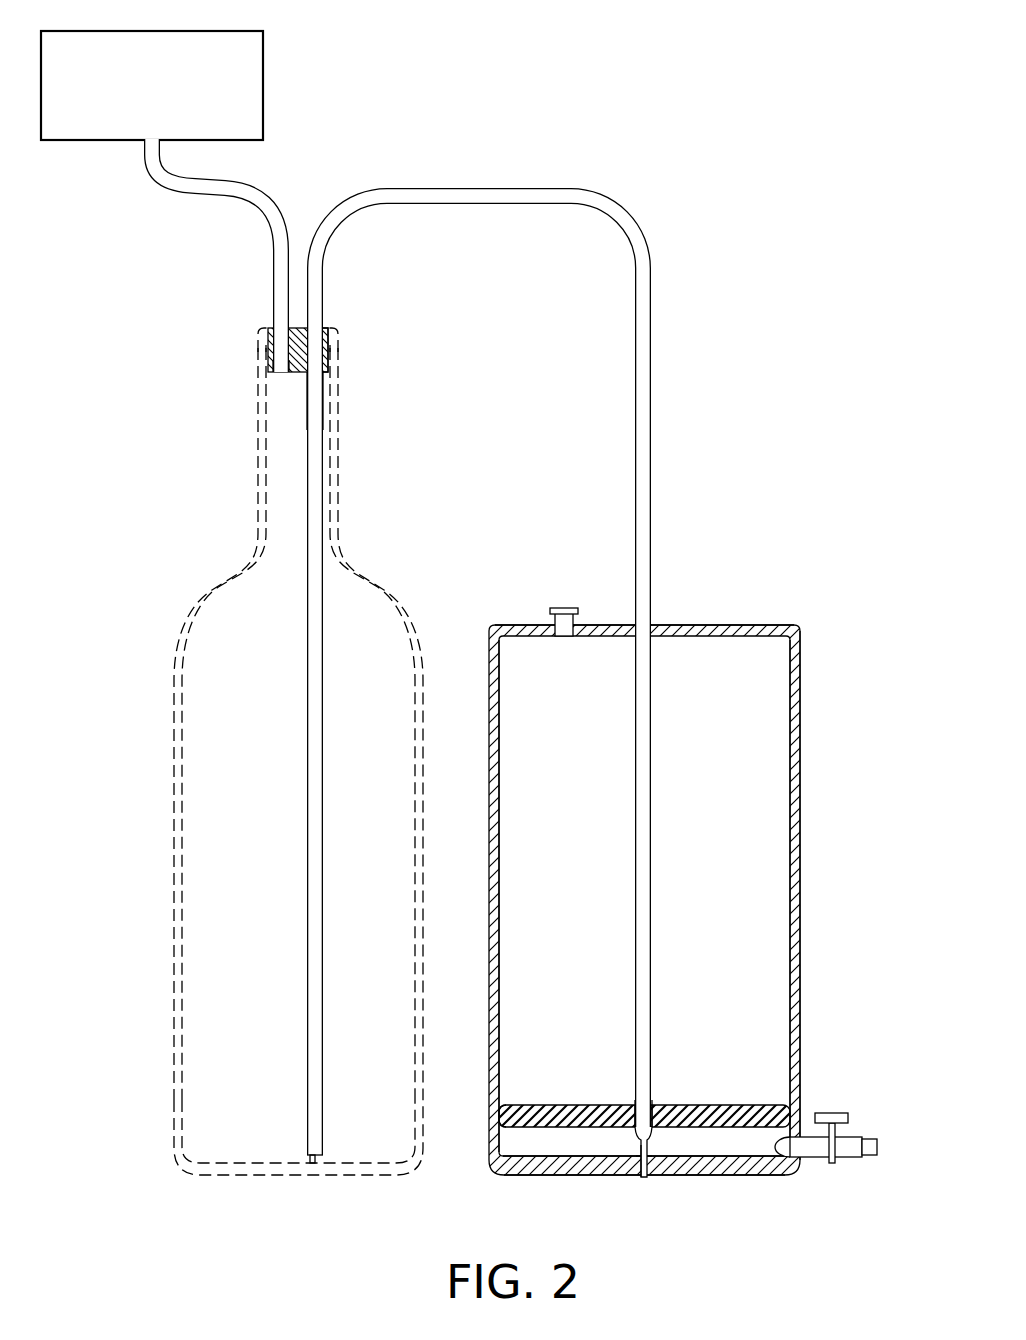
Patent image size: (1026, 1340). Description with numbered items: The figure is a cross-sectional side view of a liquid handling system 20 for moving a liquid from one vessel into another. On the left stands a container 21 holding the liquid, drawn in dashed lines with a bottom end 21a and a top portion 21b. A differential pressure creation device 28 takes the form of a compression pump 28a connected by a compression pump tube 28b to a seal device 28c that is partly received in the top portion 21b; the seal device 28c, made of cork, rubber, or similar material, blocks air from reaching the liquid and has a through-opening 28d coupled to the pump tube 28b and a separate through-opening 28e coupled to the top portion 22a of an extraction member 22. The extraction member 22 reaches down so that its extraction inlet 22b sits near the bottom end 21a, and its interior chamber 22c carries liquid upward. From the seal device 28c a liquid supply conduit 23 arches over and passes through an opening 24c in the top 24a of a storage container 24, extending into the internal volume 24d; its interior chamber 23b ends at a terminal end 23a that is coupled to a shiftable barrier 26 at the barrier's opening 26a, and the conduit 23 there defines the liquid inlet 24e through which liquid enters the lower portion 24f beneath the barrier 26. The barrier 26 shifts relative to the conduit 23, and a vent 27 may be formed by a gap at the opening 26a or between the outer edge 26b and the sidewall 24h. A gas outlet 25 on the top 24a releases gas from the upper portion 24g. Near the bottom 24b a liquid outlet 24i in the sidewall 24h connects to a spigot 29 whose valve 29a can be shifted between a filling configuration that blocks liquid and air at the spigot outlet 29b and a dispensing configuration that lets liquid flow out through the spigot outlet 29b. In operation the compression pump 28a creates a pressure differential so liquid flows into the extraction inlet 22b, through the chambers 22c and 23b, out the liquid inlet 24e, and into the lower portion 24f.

The liquid handling system 20 is at (758, 181).
The container 21 is at (172, 690).
The bottom end 21a is at (172, 1152).
The top portion 21b is at (340, 345).
The extraction member 22 is at (306, 910).
The top portion 22a is at (325, 393).
The extraction inlet 22b is at (313, 1166).
The interior chamber 22c is at (311, 1163).
The liquid supply conduit 23 is at (653, 347).
The terminal end 23a is at (649, 1180).
The interior chamber 23b is at (640, 1163).
The storage container 24 is at (800, 690).
The top 24a is at (738, 625).
The bottom 24b is at (727, 1172).
The opening 24c is at (653, 618).
The internal volume 24d is at (763, 780).
The liquid inlet 24e is at (648, 1165).
The lower portion 24f is at (519, 1143).
The upper portion 24g is at (505, 1071).
The sidewall 24h is at (785, 927).
The liquid outlet 24i is at (777, 1152).
The gas outlet 25 is at (562, 608).
The shiftable barrier 26 is at (580, 1117).
The opening 26a is at (641, 1133).
The outer edge 26b is at (495, 1120).
The vent 27 is at (653, 1105).
The differential pressure creation device 28 is at (302, 160).
The compression pump 28a is at (264, 40).
The compression pump tube 28b is at (207, 199).
The seal device 28c is at (298, 375).
The through-opening 28d is at (283, 373).
The through-opening 28e is at (327, 376).
The spigot 29 is at (858, 1150).
The valve 29a is at (834, 1112).
The spigot outlet 29b is at (878, 1146).